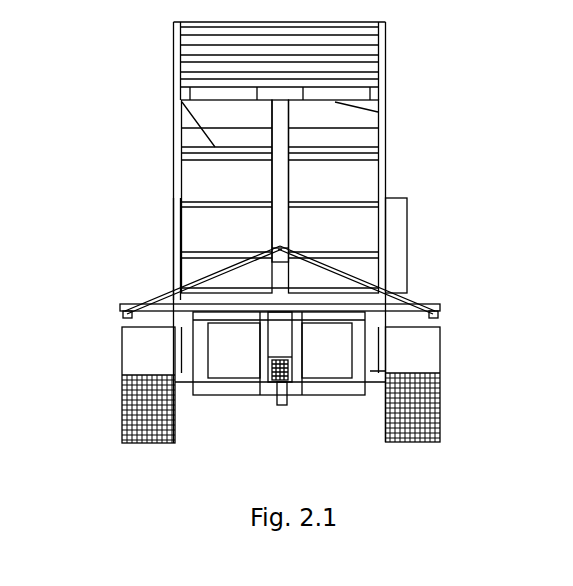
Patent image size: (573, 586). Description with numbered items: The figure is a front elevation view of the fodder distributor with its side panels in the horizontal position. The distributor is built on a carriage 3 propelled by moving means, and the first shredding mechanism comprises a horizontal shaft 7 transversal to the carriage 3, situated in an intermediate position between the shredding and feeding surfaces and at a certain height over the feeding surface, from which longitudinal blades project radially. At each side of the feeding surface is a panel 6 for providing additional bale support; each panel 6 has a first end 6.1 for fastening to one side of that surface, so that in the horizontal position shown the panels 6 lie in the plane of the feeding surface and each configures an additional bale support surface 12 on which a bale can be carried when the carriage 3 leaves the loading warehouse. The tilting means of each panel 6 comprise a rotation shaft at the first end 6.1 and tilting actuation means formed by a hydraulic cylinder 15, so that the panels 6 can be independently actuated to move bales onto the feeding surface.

The carriage 3 is at (102, 112).
The horizontal shaft 7 is at (177, 112).
The hydraulic cylinder 15 is at (245, 258).
The first end 6.1 is at (170, 300).
The additional bale support surface 12 is at (142, 306).
The panel 6 is at (127, 310).